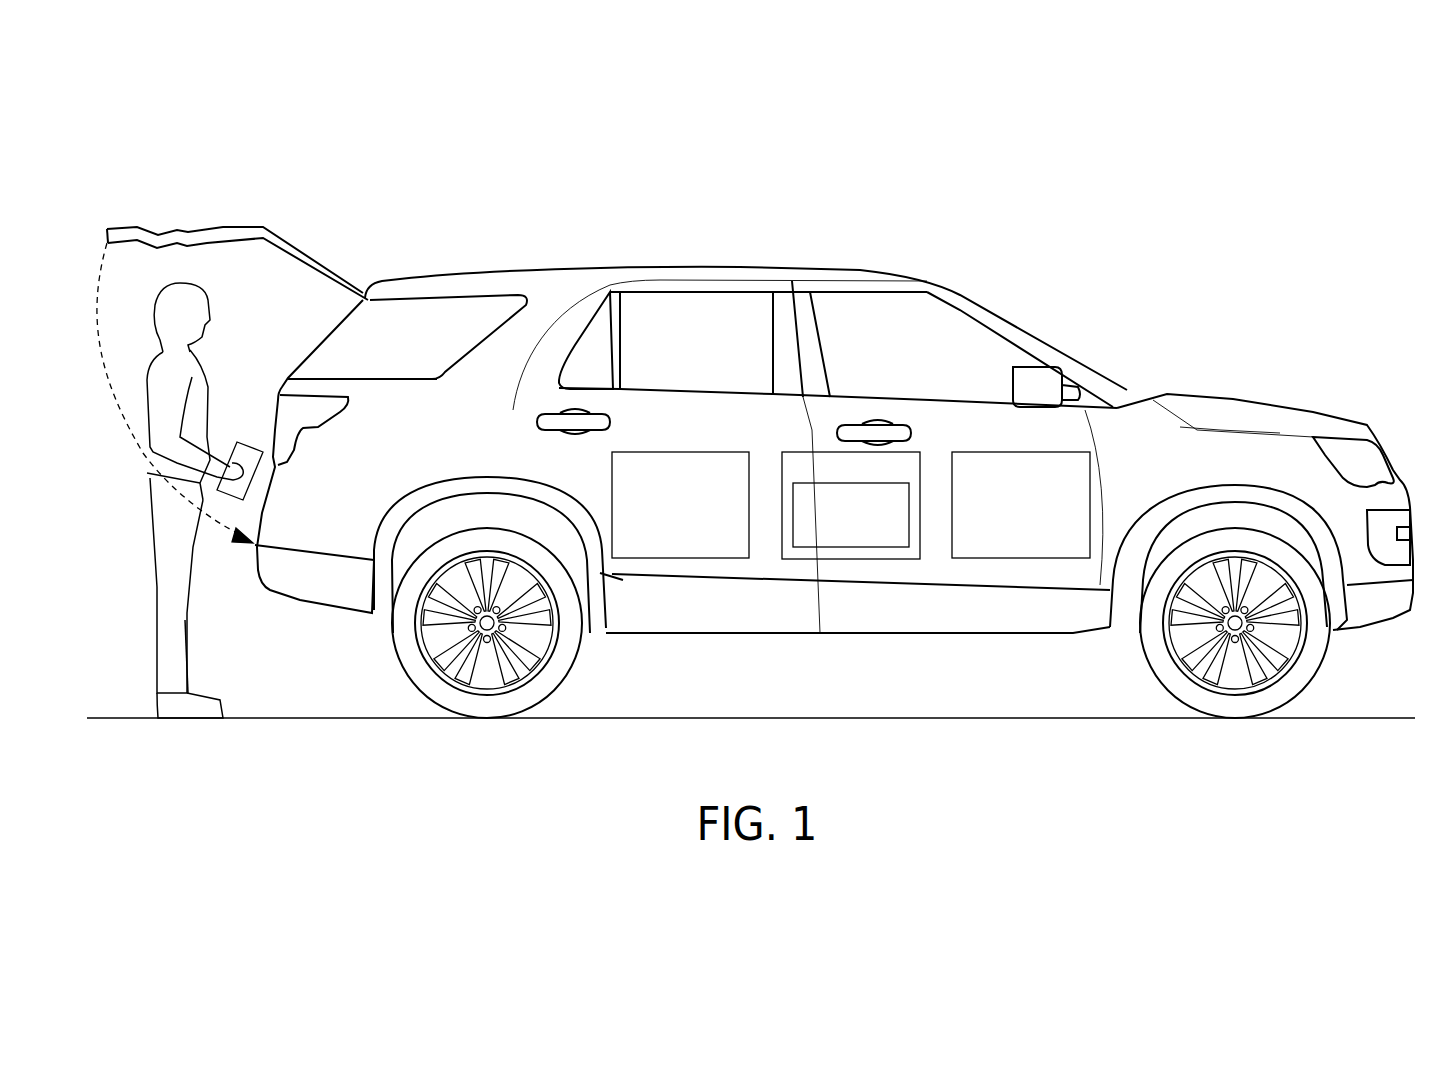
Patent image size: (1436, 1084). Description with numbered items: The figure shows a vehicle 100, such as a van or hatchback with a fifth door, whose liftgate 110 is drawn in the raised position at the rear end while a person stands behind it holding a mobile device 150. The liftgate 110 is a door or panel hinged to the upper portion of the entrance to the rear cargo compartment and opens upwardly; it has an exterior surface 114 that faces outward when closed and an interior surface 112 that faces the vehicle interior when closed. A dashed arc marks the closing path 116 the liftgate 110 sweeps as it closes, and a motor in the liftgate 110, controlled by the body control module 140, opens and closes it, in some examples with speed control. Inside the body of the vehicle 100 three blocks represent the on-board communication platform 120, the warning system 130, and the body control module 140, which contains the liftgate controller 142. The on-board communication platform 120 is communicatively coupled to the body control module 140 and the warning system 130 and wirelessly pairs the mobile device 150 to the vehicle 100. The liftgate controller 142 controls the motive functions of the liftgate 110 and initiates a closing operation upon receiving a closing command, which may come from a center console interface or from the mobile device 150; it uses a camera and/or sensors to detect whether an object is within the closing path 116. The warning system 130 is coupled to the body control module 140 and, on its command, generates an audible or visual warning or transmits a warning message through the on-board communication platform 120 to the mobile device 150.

The vehicle 100 is at (857, 270).
The liftgate 110 is at (173, 218).
The interior surface 112 is at (275, 247).
The exterior surface 114 is at (263, 227).
The closing path 116 is at (122, 412).
The on-board communication platform 120 is at (1003, 452).
The warning system 130 is at (686, 452).
The body control module 140 is at (800, 452).
The liftgate controller 142 is at (853, 547).
The mobile device 150 is at (249, 440).